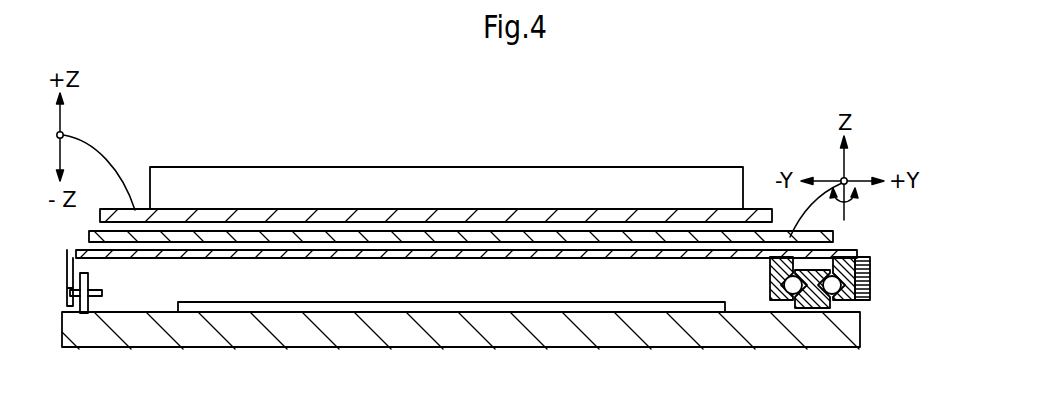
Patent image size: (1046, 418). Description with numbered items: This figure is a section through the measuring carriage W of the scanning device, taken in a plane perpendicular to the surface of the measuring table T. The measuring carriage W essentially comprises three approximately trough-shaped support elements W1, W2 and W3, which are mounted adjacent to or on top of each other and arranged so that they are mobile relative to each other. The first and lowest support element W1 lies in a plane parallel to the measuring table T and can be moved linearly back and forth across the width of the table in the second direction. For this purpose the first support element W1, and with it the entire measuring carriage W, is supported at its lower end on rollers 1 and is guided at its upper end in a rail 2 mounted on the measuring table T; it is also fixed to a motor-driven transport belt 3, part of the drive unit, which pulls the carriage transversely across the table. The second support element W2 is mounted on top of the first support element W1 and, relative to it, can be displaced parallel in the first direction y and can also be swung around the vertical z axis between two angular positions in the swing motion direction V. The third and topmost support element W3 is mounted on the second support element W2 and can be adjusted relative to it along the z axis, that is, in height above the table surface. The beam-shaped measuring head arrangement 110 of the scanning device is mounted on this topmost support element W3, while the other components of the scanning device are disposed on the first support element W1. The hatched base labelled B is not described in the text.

The measuring head arrangement 110 is at (340, 166).
The measuring carriage W is at (689, 125).
The first support element W1 is at (593, 255).
The second support element W2 is at (500, 237).
The third support element W3 is at (413, 214).
The rollers 1 is at (88, 277).
The rail 2 is at (815, 303).
The transport belt 3 is at (871, 277).
The base plate B is at (667, 307).
The measuring table T is at (308, 332).
The swing motion direction V is at (847, 210).